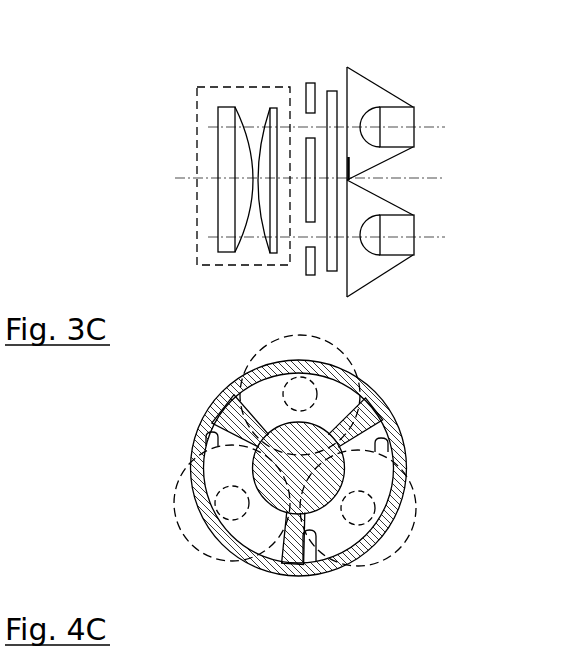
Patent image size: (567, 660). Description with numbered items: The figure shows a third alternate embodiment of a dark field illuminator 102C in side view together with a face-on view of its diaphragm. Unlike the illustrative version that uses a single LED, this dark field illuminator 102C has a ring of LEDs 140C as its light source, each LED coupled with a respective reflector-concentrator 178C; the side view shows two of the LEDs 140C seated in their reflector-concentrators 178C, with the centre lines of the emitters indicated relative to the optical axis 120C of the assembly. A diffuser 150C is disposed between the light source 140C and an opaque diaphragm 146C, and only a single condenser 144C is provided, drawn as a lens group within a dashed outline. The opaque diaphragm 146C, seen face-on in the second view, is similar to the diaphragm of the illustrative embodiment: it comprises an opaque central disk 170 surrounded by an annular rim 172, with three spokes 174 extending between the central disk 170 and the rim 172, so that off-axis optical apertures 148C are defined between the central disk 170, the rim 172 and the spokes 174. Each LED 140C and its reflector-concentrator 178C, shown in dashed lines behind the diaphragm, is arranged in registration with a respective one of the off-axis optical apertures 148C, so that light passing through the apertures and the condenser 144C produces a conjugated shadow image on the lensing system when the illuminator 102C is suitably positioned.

In FIG. 3C, the dark field illuminator 102C is at (151, 119).
In FIG. 3C, the optical axis 120C is at (180, 178).
In FIG. 3C, the condenser 144C is at (214, 87).
In FIG. 3C, the opaque diaphragm 146C is at (309, 83).
In FIG. 4C, the opaque diaphragm 146C is at (304, 469).
In FIG. 3C, the off-axis optical apertures 148C is at (312, 130).
In FIG. 4C, the off-axis optical apertures 148C is at (263, 402).
In FIG. 3C, the diffuser 150C is at (332, 91).
In FIG. 3C, the reflector-concentrator 178C is at (380, 85).
In FIG. 4C, the reflector-concentrator 178C is at (352, 357).
In FIG. 3C, the LEDs 140C is at (393, 138).
In FIG. 4C, the LEDs 140C is at (318, 393).
In FIG. 4C, the central disk 170 is at (277, 506).
In FIG. 4C, the annular rim 172 is at (340, 566).
In FIG. 4C, the spokes 174 is at (314, 540).